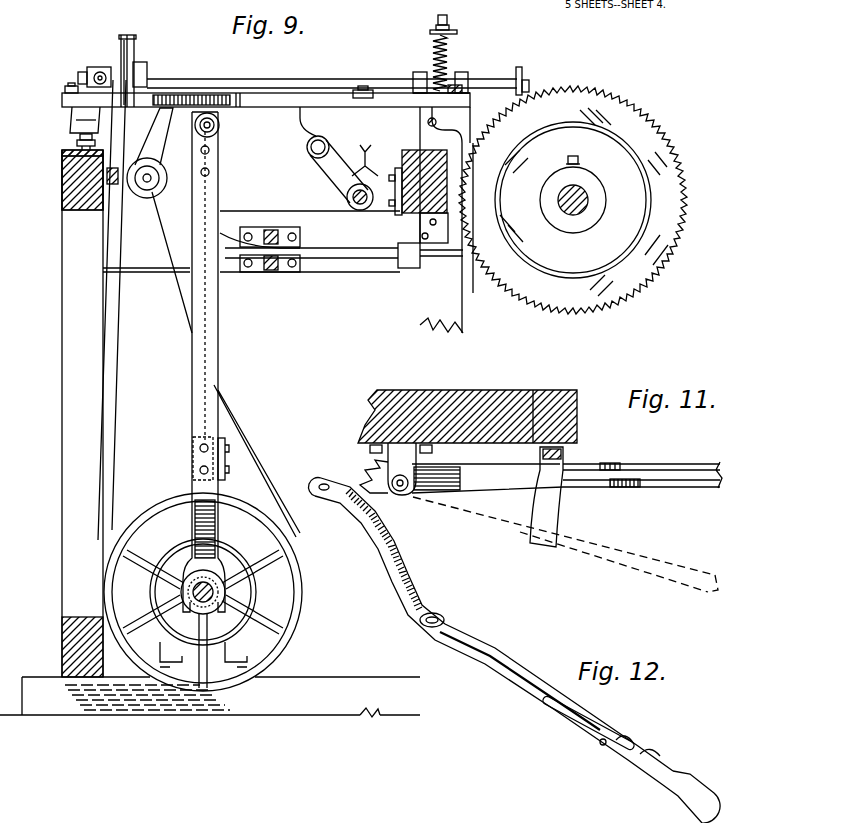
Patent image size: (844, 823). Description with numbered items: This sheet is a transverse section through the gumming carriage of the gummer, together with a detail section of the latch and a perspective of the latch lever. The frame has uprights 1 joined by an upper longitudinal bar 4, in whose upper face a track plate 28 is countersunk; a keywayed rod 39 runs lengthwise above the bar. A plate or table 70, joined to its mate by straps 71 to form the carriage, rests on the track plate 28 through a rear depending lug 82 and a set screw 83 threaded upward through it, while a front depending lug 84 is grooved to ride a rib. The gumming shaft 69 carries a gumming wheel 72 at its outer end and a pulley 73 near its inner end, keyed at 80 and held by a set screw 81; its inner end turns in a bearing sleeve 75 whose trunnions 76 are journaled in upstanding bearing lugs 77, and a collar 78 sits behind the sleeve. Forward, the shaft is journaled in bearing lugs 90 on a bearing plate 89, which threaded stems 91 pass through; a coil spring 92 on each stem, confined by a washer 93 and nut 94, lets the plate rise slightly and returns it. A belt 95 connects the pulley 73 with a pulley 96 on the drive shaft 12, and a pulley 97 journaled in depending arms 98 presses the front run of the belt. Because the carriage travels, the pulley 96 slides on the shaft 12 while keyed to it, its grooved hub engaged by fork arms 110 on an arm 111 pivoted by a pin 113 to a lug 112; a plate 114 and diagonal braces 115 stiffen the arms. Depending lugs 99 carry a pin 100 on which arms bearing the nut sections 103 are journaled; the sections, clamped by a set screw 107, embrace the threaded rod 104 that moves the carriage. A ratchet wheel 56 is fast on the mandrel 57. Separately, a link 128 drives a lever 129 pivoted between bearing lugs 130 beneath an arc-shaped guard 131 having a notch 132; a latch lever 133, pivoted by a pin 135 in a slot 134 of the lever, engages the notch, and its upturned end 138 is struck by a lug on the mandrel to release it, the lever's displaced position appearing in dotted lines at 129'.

In FIG. 9, the uprights 1 is at (62, 440).
In FIG. 9, the upper longitudinally extending bar 4 is at (70, 200).
In FIG. 9, the drive shaft 12 is at (215, 595).
In FIG. 9, the facing plate or track plate 28 is at (64, 153).
In FIG. 9, the rod 39 is at (430, 119).
In FIG. 9, the ratchet wheel 56 is at (648, 276).
In FIG. 9, the mandrel 57 is at (576, 216).
In FIG. 9, the gumming shaft 69 is at (288, 80).
In FIG. 9, the plate or table 70 is at (237, 98).
In FIG. 9, the straps 71 is at (66, 89).
In FIG. 9, the gumming wheel 72 is at (522, 71).
In FIG. 9, the pulley 73 is at (134, 42).
In FIG. 9, the bearing sleeve 75 is at (125, 60).
In FIG. 9, the trunnions or journal pins 76 is at (82, 72).
In FIG. 9, the bearing lugs 77 is at (103, 75).
In FIG. 9, the collar 78 is at (94, 67).
In FIG. 9, the key 80 is at (150, 86).
In FIG. 9, the set screw 81 is at (141, 64).
In FIG. 9, the depending lug 82 is at (74, 118).
In FIG. 9, the set screw 83 is at (80, 142).
In FIG. 9, the depending lug 84 is at (446, 128).
In FIG. 9, the bearing plate 89 is at (518, 92).
In FIG. 9, the bearing lugs 90 is at (420, 74).
In FIG. 9, the threaded stems 91 is at (450, 20).
In FIG. 9, the coil spring 92 is at (449, 54).
In FIG. 9, the washer 93 is at (432, 33).
In FIG. 9, the nut 94 is at (455, 33).
In FIG. 9, the belt 95 is at (118, 373).
In FIG. 9, the pulley 96 is at (298, 632).
In FIG. 9, the pulley 97 is at (152, 168).
In FIG. 9, the arms 98 is at (150, 140).
In FIG. 9, the depending lugs 99 is at (329, 128).
In FIG. 9, the pin 100 is at (316, 152).
In FIG. 9, the nut sections 103 is at (349, 206).
In FIG. 9, the threaded rod 104 is at (360, 208).
In FIG. 9, the set screw 107 is at (372, 160).
In FIG. 9, the fork arms 110 is at (205, 649).
In FIG. 9, the arm 111 is at (218, 345).
In FIG. 9, the lug 112 is at (220, 121).
In FIG. 9, the pin 113 is at (216, 133).
In FIG. 9, the plate 114 is at (222, 460).
In FIG. 9, the diagonal braces 115 is at (210, 200).
In FIG. 9, the link 128 is at (64, 185).
In FIG. 11, the lever 129 is at (461, 504).
In FIG. 12, the lever 129 is at (515, 650).
In FIG. 11, the lever alternate position 129' is at (565, 545).
In FIG. 9, the bearing lugs 130 is at (266, 232).
In FIG. 11, the bearing lugs 130 is at (378, 458).
In FIG. 9, the arc-shaped guard 131 is at (410, 258).
In FIG. 11, the arc-shaped guard 131 is at (552, 548).
In FIG. 11, the notch 132 is at (576, 470).
In FIG. 11, the latch lever 133 is at (610, 488).
In FIG. 12, the latch lever 133 is at (604, 724).
In FIG. 12, the slot 134 is at (655, 760).
In FIG. 11, the pin 135 is at (636, 468).
In FIG. 12, the pin 135 is at (598, 748).
In FIG. 12, the laterally upturned end 138 is at (636, 742).